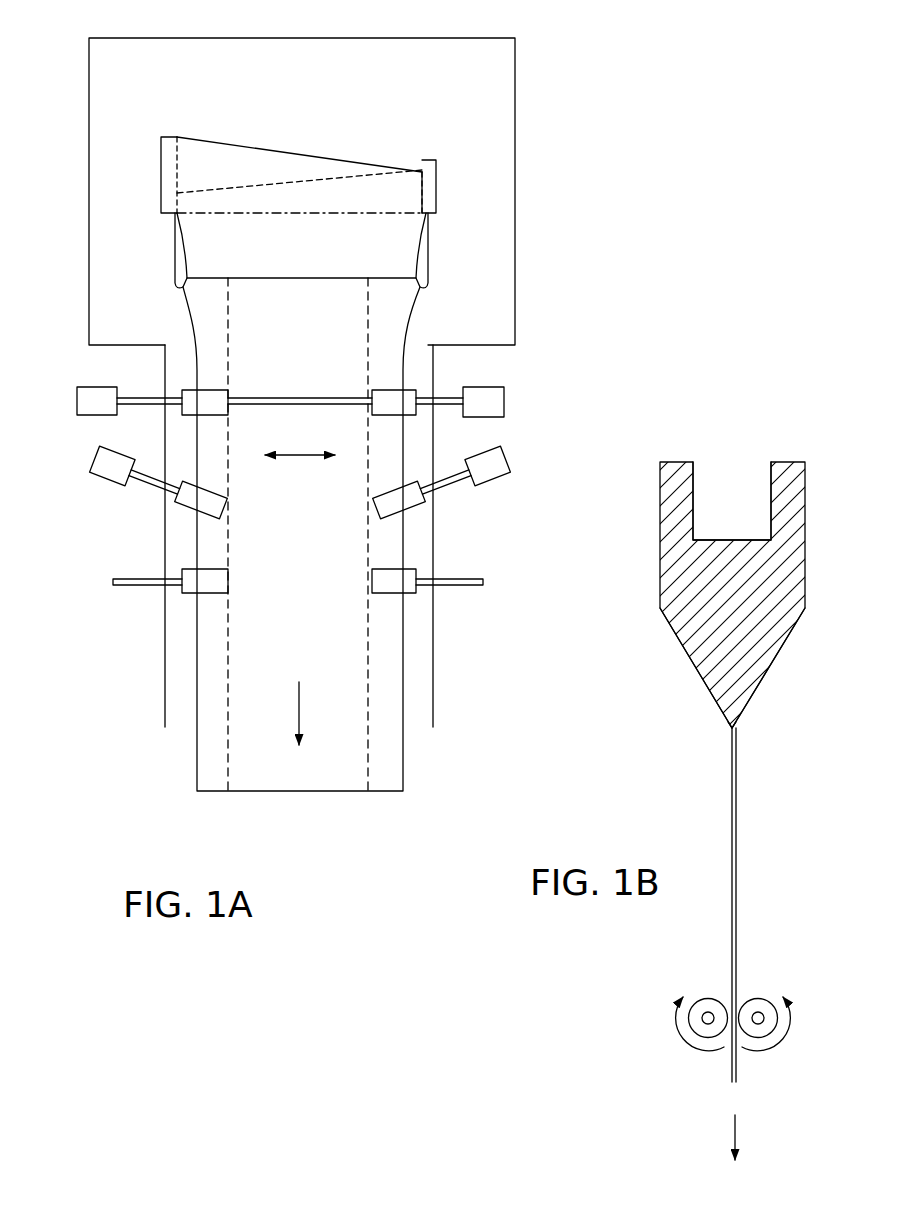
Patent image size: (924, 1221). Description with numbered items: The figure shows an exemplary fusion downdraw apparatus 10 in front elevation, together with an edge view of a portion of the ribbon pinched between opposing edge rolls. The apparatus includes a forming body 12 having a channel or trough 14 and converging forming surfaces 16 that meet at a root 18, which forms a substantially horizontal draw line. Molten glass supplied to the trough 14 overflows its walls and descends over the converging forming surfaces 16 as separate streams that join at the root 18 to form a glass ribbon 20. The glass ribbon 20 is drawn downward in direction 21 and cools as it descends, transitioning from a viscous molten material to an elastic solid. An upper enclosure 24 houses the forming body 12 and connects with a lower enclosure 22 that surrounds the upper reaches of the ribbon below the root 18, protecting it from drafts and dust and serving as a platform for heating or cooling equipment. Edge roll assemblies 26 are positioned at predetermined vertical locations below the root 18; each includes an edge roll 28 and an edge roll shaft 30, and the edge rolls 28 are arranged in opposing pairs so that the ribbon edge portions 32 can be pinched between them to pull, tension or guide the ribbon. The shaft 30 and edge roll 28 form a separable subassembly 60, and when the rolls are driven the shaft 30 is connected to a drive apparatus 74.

In FIG. 1A, the fusion downdraw apparatus 10 is at (582, 307).
In FIG. 1A, the forming body 12 is at (440, 190).
In FIG. 1B, the forming body 12 is at (842, 557).
In FIG. 1A, the trough 14 is at (303, 180).
In FIG. 1B, the trough 14 is at (713, 531).
In FIG. 1A, the converging forming surfaces 16 is at (260, 258).
In FIG. 1B, the converging forming surfaces 16 is at (770, 668).
In FIG. 1A, the root 18 is at (208, 278).
In FIG. 1B, the root 18 is at (730, 727).
In FIG. 1A, the glass ribbon 20 is at (323, 795).
In FIG. 1B, the glass ribbon 20 is at (737, 863).
In FIG. 1A, the direction 21 is at (298, 710).
In FIG. 1B, the direction 21 is at (735, 1133).
In FIG. 1A, the lower enclosure 22 is at (435, 652).
In FIG. 1A, the upper enclosure 24 is at (515, 90).
In FIG. 1A, the edge roll assemblies 26 is at (130, 380).
In FIG. 1B, the edge roll assemblies 26 is at (643, 1028).
In FIG. 1A, the edge roll 28 is at (213, 390).
In FIG. 1B, the edge roll 28 is at (717, 993).
In FIG. 1A, the edge roll shaft 30 is at (263, 397).
In FIG. 1B, the edge roll shaft 30 is at (708, 1018).
In FIG. 1A, the ribbon edge portions 32 is at (208, 758).
In FIG. 1A, the subassembly 60 is at (305, 457).
In FIG. 1A, the drive apparatus 74 is at (90, 460).